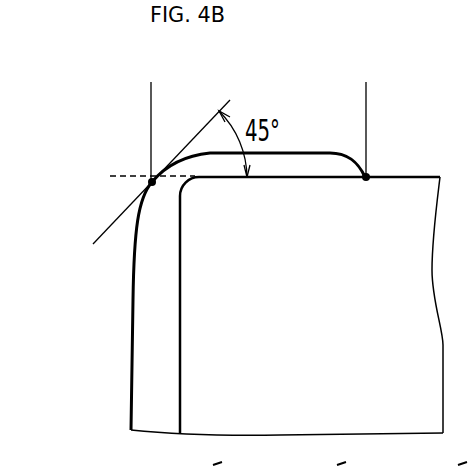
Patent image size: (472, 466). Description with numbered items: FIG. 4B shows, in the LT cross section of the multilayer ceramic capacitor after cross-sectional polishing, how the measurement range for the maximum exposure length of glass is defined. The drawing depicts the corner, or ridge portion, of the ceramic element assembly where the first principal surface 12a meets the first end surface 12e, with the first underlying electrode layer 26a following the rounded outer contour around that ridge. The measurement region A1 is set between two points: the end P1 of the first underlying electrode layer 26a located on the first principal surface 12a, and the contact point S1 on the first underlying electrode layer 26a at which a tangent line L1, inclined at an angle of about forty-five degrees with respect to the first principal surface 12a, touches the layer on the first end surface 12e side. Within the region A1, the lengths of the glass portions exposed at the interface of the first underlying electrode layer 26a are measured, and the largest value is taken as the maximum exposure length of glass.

The region A1 is at (366, 87).
The end of the first underlying electrode layer P1 is at (367, 176).
The first principal surface 12a is at (410, 176).
The contact point S1 is at (150, 184).
The tangent line L1 is at (108, 230).
The first underlying electrode layer 26a is at (150, 308).
The first end surface 12e is at (180, 345).